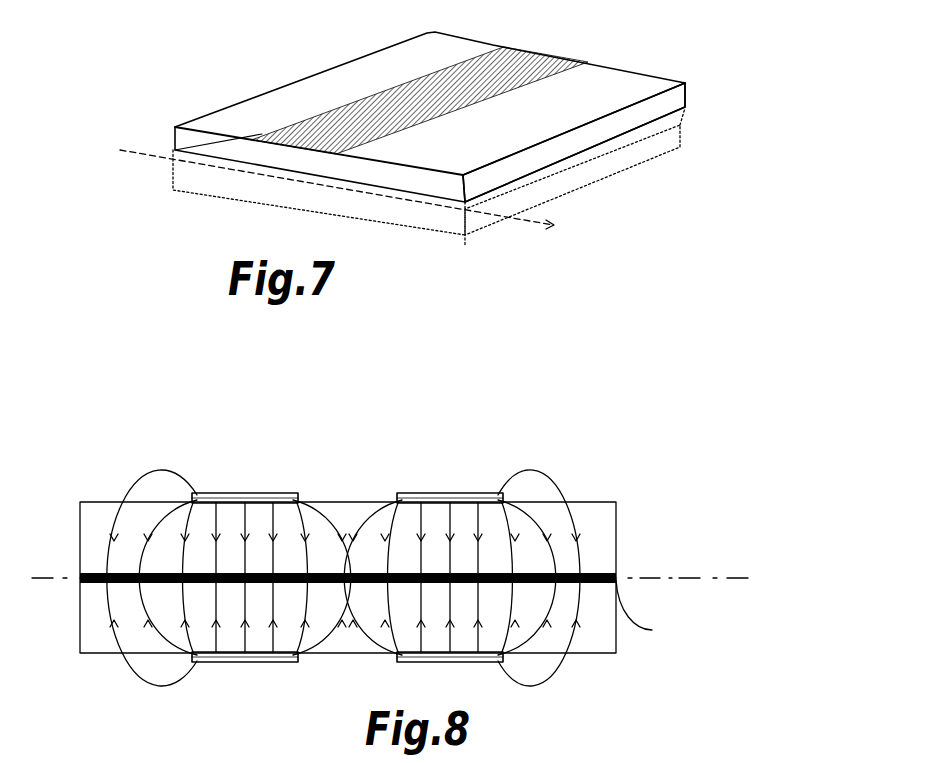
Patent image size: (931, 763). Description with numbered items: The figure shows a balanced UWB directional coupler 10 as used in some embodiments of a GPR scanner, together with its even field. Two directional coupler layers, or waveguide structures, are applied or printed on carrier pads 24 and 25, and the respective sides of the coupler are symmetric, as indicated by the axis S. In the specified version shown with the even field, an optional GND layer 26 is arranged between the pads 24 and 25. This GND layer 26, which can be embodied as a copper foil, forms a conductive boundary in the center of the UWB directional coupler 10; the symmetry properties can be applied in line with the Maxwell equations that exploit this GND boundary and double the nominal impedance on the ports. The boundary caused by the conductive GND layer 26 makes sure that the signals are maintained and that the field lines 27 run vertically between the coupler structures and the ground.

In FIG. 7, the balanced UWB directional coupler 10 is at (282, 72).
In FIG. 7, the carrier pad 24 is at (603, 123).
In FIG. 8, the carrier pad 24 is at (605, 501).
In FIG. 7, the carrier pad 25 is at (580, 165).
In FIG. 8, the carrier pad 25 is at (600, 647).
In FIG. 8, the GND layer 26 is at (460, 635).
In FIG. 8, the field lines 27 is at (328, 514).
In FIG. 7, the axis S is at (556, 229).
In FIG. 8, the axis S is at (737, 578).